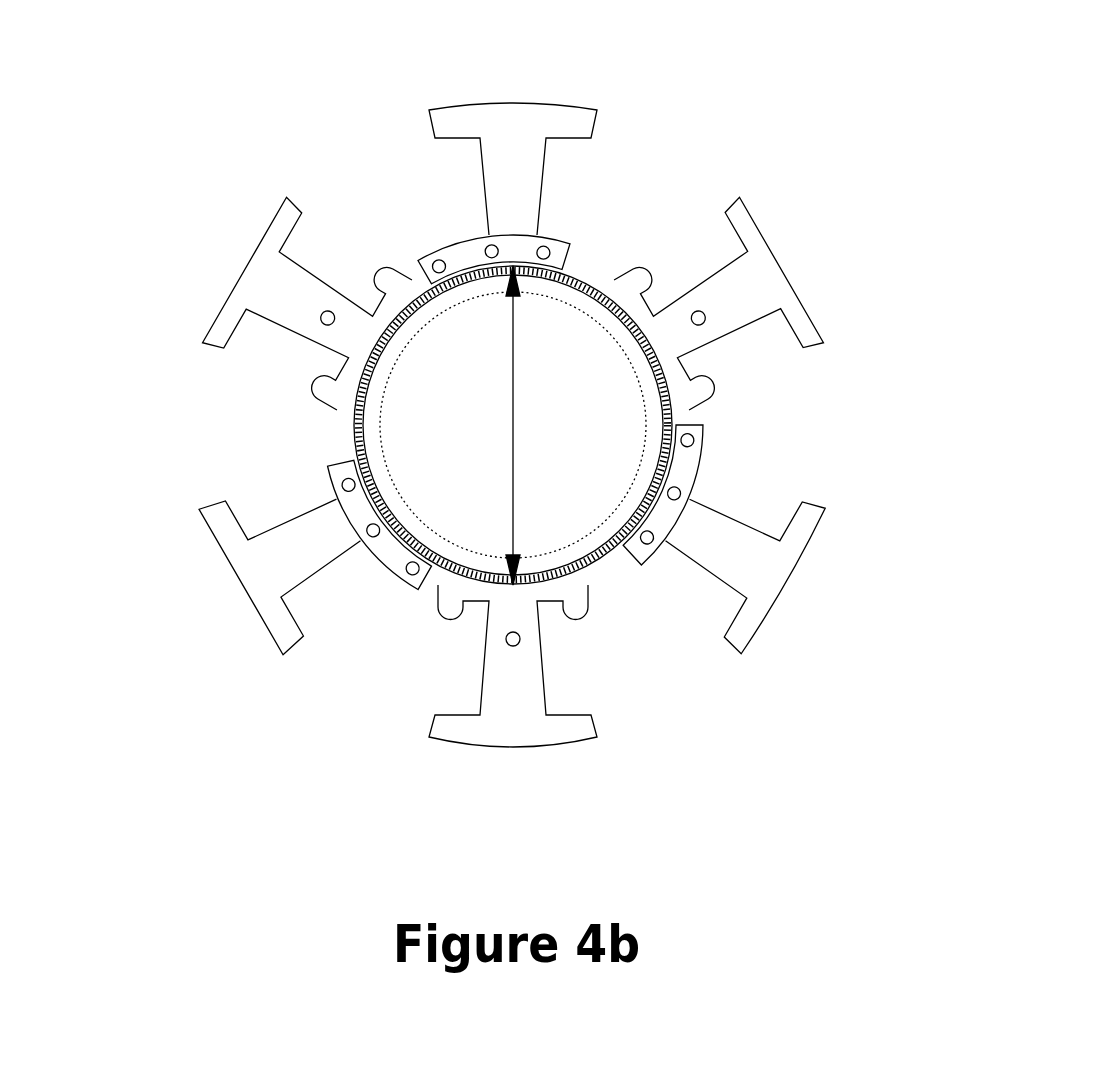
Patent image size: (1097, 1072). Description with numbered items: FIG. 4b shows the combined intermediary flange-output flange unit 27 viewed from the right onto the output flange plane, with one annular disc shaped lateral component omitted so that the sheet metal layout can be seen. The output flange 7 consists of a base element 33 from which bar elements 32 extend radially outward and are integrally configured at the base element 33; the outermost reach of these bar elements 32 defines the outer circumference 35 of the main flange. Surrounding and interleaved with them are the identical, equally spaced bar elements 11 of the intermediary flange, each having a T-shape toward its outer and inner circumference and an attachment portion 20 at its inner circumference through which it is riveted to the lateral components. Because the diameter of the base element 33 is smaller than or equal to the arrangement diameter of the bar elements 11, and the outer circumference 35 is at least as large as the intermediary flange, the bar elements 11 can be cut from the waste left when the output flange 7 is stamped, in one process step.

The combined intermediary flange-output flange unit 27 is at (664, 190).
The attachment portion 20 is at (467, 250).
The output flange 7 is at (774, 271).
The bar element 11 is at (722, 520).
The outer circumference of the main flange 35 is at (228, 293).
The bar element 32 is at (526, 692).
The base element 33 is at (357, 433).